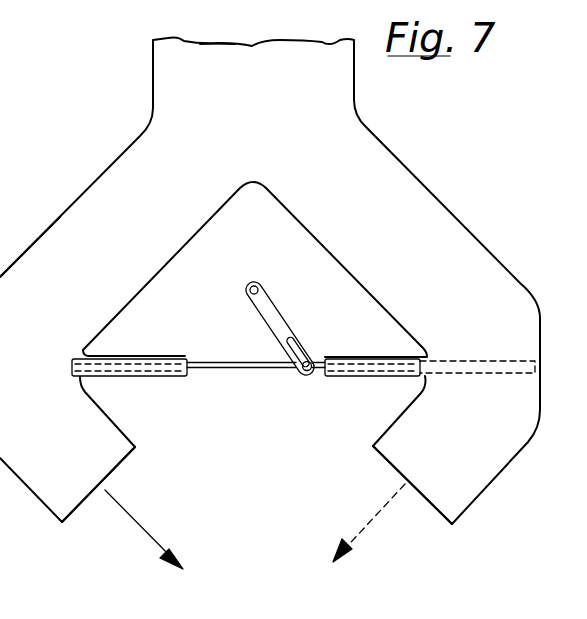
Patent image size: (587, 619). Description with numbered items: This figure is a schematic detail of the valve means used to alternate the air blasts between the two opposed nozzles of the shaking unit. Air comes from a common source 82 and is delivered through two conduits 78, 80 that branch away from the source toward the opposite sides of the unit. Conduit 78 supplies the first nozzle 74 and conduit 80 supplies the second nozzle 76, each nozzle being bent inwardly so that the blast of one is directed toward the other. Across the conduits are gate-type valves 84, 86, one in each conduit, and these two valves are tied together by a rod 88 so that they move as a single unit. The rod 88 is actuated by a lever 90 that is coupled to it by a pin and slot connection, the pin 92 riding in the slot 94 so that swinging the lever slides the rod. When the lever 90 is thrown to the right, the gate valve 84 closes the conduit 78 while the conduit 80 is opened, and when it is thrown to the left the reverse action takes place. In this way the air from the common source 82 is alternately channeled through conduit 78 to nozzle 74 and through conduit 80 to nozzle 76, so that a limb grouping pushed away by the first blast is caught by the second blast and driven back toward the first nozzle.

The nozzle 74 is at (433, 497).
The second nozzle 76 is at (97, 495).
The conduit 78 is at (412, 194).
The conduit 80 is at (60, 222).
The common source 82 is at (218, 48).
The gate-type valve 84 is at (469, 362).
The gate-type valve 86 is at (150, 362).
The rod 88 is at (226, 373).
The lever 90 is at (277, 308).
The pin 92 is at (304, 375).
The slot 94 is at (299, 336).